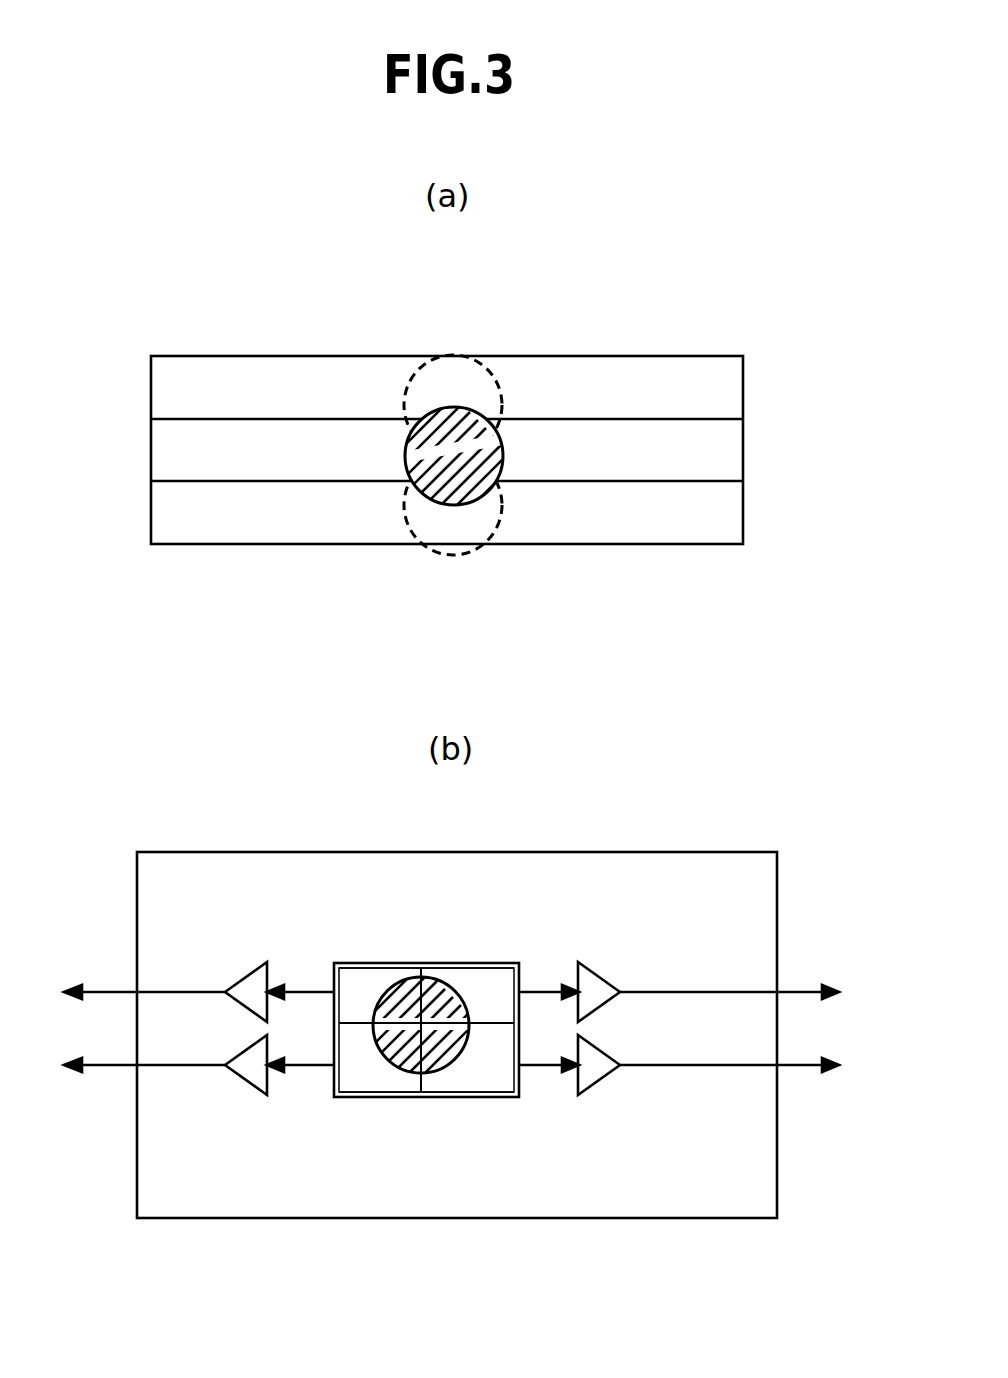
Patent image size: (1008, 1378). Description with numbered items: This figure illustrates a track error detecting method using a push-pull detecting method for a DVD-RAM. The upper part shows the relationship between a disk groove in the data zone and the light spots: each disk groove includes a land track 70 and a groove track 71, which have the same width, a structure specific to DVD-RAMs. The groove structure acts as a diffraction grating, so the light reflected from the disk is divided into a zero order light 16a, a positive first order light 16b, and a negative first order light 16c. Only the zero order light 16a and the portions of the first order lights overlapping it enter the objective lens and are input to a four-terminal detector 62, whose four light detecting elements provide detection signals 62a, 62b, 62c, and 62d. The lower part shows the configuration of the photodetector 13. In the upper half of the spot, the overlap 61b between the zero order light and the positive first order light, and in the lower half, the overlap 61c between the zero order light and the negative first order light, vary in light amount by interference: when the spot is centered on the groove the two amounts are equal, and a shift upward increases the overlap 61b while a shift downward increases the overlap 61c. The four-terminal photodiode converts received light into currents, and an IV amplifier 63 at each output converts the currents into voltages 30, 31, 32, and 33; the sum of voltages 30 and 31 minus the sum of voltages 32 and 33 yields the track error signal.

The photodetector 13 is at (748, 888).
The zero order light 16a is at (483, 458).
The positive first order light 16b is at (492, 372).
The negative first order light 16c is at (478, 548).
The voltage 30 is at (105, 991).
The voltage 31 is at (798, 992).
The voltage 32 is at (798, 1066).
The voltage 33 is at (105, 1066).
The overlap between the zero order light and the positive first order light 61b is at (398, 985).
The overlap between the zero order light and the negative first order light 61c is at (443, 1073).
The four-terminal detector 62 is at (345, 1073).
The detection signal 62a is at (358, 985).
The detection signal 62b is at (500, 980).
The detection signal 62c is at (483, 1080).
The detection signal 62d is at (367, 1073).
The IV amplifier 63 is at (247, 982).
The land track 70 is at (733, 382).
The groove track 71 is at (733, 452).